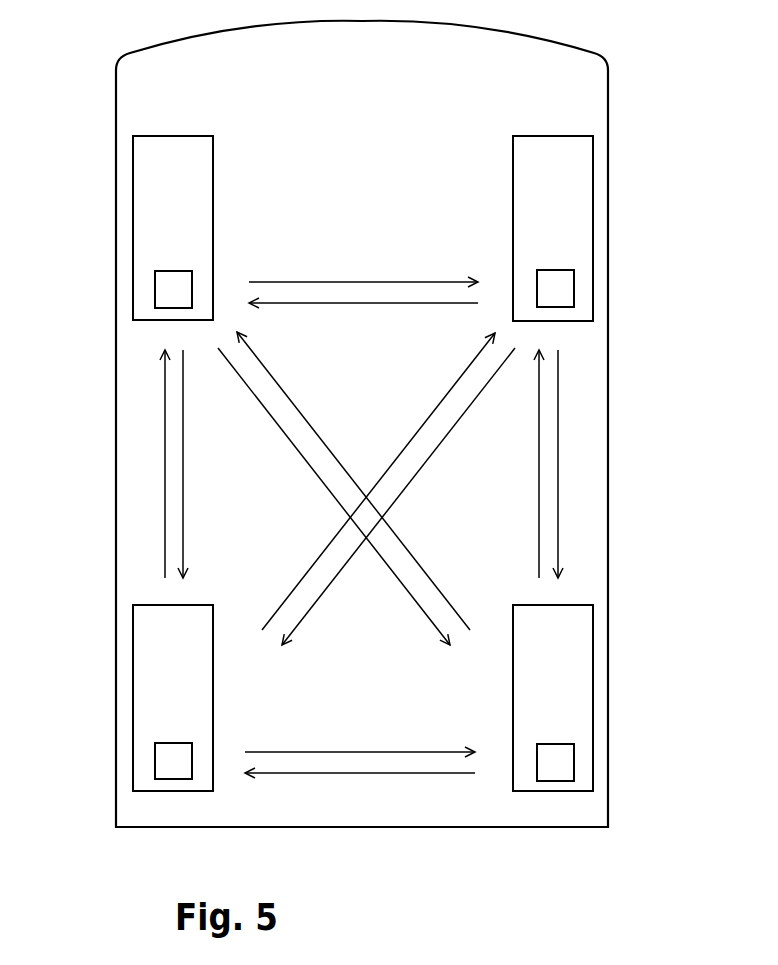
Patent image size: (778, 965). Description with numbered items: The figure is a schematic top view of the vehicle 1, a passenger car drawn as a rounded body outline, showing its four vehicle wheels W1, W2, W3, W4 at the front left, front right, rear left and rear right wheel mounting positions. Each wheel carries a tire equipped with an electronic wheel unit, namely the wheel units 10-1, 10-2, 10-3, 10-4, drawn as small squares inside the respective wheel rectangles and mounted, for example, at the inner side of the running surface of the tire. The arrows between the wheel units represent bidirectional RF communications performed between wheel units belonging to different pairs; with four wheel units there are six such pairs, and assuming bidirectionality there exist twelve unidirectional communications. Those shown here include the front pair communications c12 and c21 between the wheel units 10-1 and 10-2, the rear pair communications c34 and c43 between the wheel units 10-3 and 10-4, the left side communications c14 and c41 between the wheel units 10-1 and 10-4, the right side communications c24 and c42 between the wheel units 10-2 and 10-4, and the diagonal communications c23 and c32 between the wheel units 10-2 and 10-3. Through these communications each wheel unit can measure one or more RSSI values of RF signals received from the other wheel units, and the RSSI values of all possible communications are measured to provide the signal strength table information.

The vehicle 1 is at (80, 34).
The vehicle wheel W1 is at (150, 202).
The vehicle wheel W2 is at (573, 206).
The vehicle wheel W3 is at (155, 665).
The vehicle wheel W4 is at (578, 665).
The electronic wheel unit 10-1 is at (163, 285).
The electronic wheel unit 10-2 is at (565, 282).
The electronic wheel unit 10-3 is at (165, 757).
The electronic wheel unit 10-4 is at (563, 757).
The unidirectional communication c12 is at (363, 267).
The unidirectional communication c21 is at (363, 319).
The unidirectional communication c34 is at (360, 737).
The unidirectional communication c43 is at (360, 788).
The unidirectional communication c41 is at (295, 481).
The unidirectional communication c14 is at (316, 496).
The unidirectional communication c42 is at (516, 464).
The unidirectional communication c24 is at (580, 464).
The unidirectional communication c32 is at (378, 481).
The unidirectional communication c23 is at (398, 496).